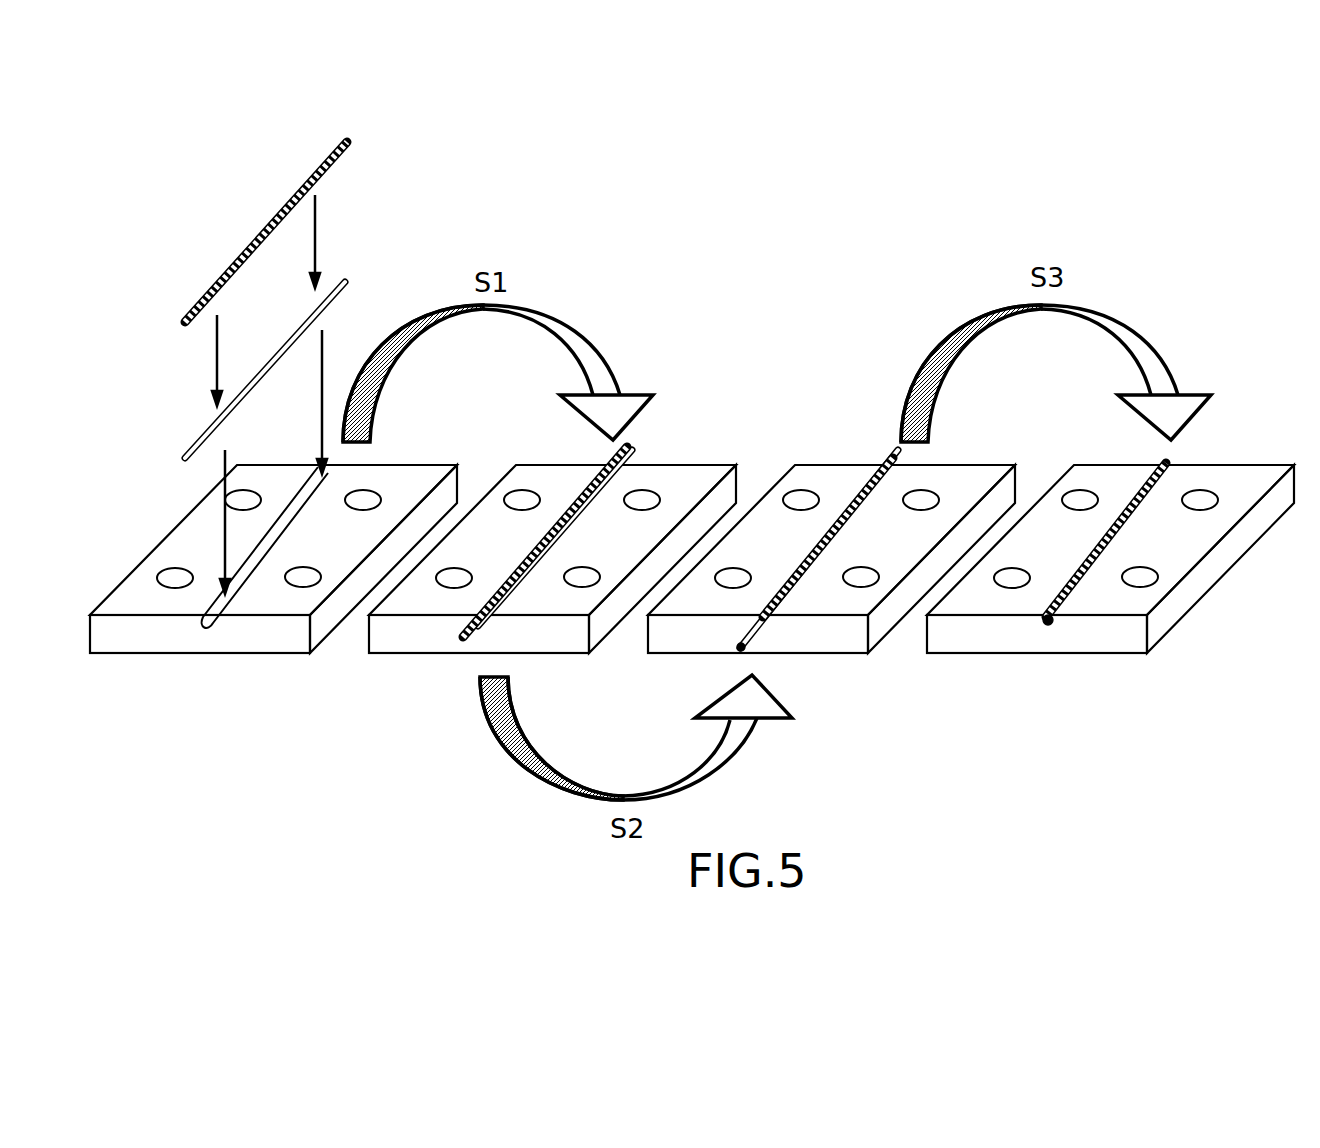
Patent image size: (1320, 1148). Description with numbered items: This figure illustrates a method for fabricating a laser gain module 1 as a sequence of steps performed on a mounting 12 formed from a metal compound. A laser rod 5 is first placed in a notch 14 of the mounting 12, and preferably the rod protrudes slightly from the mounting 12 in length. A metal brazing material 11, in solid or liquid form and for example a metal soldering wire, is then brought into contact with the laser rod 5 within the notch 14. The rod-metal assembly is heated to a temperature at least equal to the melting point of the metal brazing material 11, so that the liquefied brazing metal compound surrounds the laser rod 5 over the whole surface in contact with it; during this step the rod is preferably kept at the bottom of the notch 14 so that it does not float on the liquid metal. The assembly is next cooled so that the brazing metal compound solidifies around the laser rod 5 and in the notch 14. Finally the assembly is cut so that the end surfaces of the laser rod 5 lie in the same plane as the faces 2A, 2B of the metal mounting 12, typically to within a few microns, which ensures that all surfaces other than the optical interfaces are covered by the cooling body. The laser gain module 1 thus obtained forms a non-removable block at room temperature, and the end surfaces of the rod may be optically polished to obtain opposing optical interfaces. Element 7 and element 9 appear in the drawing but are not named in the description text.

The laser gain module 1 is at (1248, 590).
The face of the metal mounting 2A is at (1119, 638).
The face of the metal mounting 2B is at (1268, 458).
The laser rod 5 is at (340, 283).
The rod end 7 is at (1048, 622).
The embedded sleeve 9 is at (1166, 465).
The metal brazing material 11 is at (340, 147).
The mounting 12 is at (212, 533).
The notch 14 is at (228, 600).